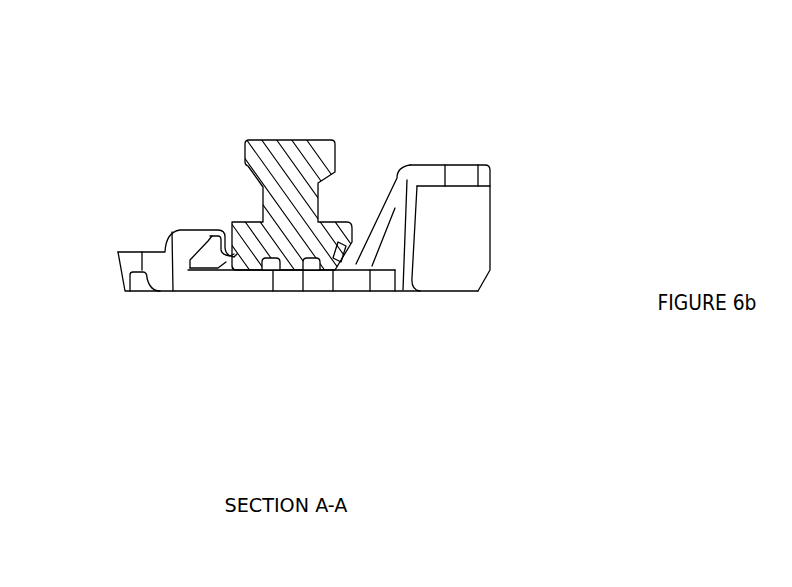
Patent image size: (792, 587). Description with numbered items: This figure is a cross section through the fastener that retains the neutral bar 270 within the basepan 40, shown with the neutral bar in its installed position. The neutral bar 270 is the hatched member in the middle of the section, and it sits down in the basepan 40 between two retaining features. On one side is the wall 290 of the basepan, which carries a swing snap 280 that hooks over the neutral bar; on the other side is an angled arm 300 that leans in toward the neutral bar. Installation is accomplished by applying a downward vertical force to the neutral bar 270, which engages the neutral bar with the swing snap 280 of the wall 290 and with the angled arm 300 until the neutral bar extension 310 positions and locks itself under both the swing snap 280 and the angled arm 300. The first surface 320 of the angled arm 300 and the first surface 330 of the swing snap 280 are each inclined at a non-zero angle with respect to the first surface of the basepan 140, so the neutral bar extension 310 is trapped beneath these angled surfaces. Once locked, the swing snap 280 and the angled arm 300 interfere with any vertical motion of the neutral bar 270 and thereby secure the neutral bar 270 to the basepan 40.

The neutral bar 270 is at (288, 139).
The swing snap 280 is at (228, 249).
The wall 290 is at (172, 228).
The first surface of swing snap 330 is at (220, 259).
The basepan 40 is at (224, 282).
The neutral bar extension 310 is at (337, 259).
The first surface of angled arm 320 is at (344, 254).
The first surface of basepan 140 is at (362, 272).
The angled arm 300 is at (373, 243).